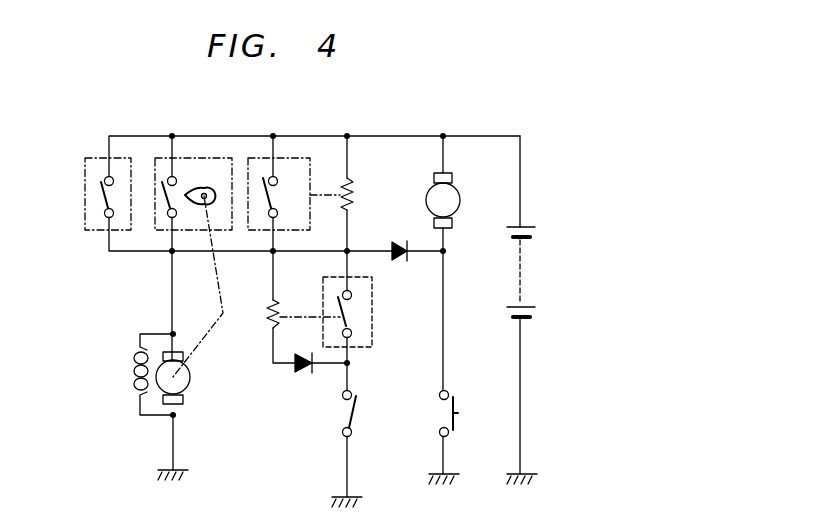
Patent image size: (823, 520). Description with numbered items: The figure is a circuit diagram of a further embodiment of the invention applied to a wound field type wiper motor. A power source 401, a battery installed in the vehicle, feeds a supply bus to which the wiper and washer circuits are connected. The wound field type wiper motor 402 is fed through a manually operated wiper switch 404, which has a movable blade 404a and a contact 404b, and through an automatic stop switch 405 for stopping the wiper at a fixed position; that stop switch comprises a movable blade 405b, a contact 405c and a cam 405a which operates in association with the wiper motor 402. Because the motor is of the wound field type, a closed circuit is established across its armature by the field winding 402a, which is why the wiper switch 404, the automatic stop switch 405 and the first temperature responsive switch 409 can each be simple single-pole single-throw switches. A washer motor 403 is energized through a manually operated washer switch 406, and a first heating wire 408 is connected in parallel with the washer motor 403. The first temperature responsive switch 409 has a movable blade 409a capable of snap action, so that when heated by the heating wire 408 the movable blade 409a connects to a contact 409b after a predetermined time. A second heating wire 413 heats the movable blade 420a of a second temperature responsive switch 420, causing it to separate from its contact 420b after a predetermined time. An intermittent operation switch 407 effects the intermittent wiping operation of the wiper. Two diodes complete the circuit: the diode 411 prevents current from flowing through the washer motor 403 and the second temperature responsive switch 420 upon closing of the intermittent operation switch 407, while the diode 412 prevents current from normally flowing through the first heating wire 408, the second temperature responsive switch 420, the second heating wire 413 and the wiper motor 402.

The power source 401 is at (523, 258).
The wound field type wiper motor 402 is at (192, 372).
The field winding 402a is at (140, 372).
The washer motor 403 is at (461, 197).
The wiper switch 404 is at (85, 202).
The movable blade 404a is at (105, 213).
The contact 404b is at (107, 176).
The automatic stop switch 405 is at (163, 232).
The cam 405a is at (207, 203).
The movable blade 405b is at (157, 184).
The contact 405c is at (176, 179).
The washer switch 406 is at (458, 407).
The intermittent operation switch 407 is at (359, 402).
The first heating wire 408 is at (356, 186).
The first temperature responsive switch 409 is at (312, 162).
The movable blade 409a is at (277, 203).
The contact 409b is at (277, 179).
The diode 411 is at (402, 262).
The diode 412 is at (305, 368).
The second heating wire 413 is at (258, 322).
The second temperature responsive switch 420 is at (362, 349).
The movable blade 420a is at (352, 320).
The contact 420b is at (354, 294).